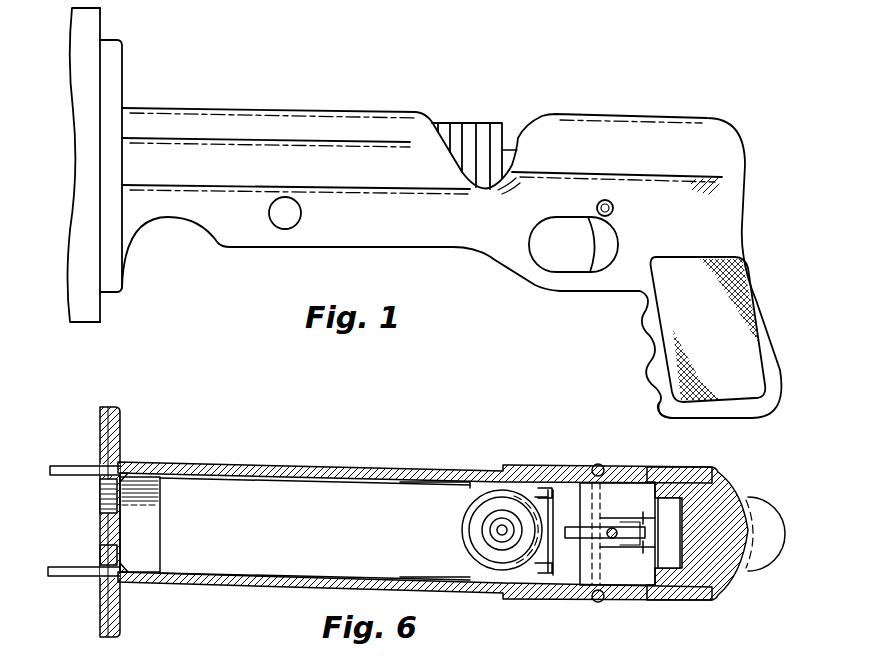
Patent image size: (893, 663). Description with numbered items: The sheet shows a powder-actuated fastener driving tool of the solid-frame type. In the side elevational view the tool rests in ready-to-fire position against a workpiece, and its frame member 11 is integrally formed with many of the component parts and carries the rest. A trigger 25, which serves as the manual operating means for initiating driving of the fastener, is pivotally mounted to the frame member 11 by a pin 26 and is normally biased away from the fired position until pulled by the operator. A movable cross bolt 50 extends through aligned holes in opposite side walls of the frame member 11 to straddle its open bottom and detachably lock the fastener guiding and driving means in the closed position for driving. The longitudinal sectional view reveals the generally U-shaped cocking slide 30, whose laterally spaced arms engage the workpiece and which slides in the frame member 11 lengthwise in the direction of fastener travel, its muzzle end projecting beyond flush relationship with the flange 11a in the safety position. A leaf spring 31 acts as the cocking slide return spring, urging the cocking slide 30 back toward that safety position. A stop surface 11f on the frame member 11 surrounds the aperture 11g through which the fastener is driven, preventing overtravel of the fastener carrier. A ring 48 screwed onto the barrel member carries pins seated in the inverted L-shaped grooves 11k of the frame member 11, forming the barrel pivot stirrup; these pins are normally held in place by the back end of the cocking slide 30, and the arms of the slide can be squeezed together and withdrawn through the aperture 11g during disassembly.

In FIG. 1, the frame member 11 is at (376, 152).
In FIG. 1, the flange 11a is at (124, 43).
In FIG. 6, the flange 11a is at (113, 406).
In FIG. 6, the stop surface 11f is at (118, 560).
In FIG. 6, the aperture 11g is at (99, 512).
In FIG. 6, the inverted L-shaped grooves 11k is at (527, 468).
In FIG. 1, the trigger 25 is at (592, 245).
In FIG. 6, the trigger 25 is at (630, 548).
In FIG. 1, the pin 26 is at (613, 204).
In FIG. 6, the cocking slide 30 is at (68, 465).
In FIG. 6, the leaf spring 31 is at (632, 505).
In FIG. 6, the ring 48 is at (466, 523).
In FIG. 1, the cross bolt 50 is at (302, 213).